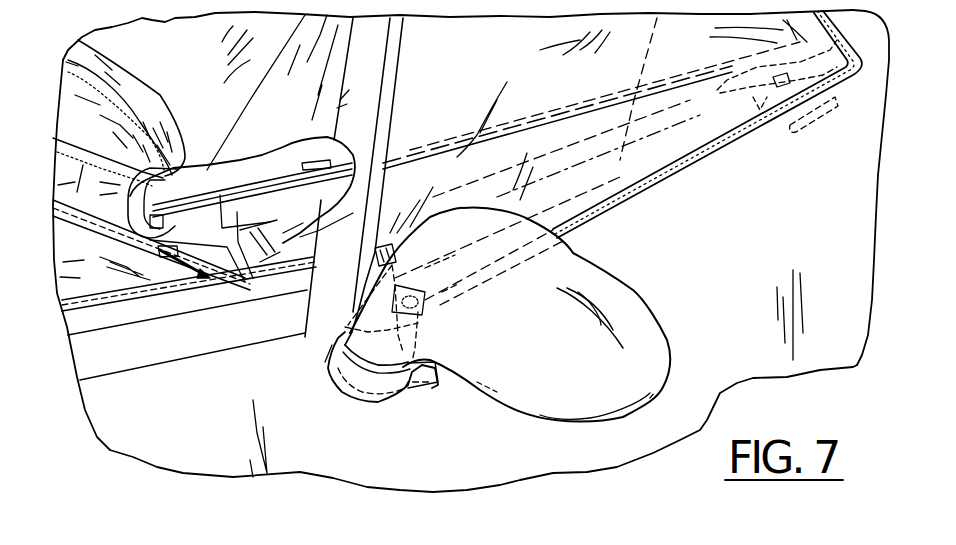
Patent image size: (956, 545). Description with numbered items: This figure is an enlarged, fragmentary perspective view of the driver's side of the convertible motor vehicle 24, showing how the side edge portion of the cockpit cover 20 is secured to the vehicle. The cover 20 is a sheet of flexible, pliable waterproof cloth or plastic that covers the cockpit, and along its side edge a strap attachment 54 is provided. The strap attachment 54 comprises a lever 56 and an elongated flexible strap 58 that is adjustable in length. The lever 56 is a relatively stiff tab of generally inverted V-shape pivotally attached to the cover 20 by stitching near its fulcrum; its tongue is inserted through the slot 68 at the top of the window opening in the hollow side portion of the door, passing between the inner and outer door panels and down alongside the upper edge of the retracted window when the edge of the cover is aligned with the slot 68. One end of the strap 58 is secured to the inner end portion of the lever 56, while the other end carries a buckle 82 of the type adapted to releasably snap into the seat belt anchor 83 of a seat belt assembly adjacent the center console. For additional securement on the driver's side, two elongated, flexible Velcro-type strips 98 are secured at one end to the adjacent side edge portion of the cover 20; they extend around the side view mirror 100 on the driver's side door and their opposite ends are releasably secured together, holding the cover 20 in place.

The cockpit cover 20 is at (484, 65).
The convertible motor vehicle 24 is at (823, 317).
The strap attachment 54 is at (287, 200).
The lever 56 is at (803, 128).
The strap 58 is at (293, 167).
The slot 68 is at (757, 113).
The buckle 82 is at (168, 194).
The seat belt anchor 83 is at (173, 227).
The Velcro-type strip 98 is at (352, 378).
The side view mirror 100 is at (517, 388).